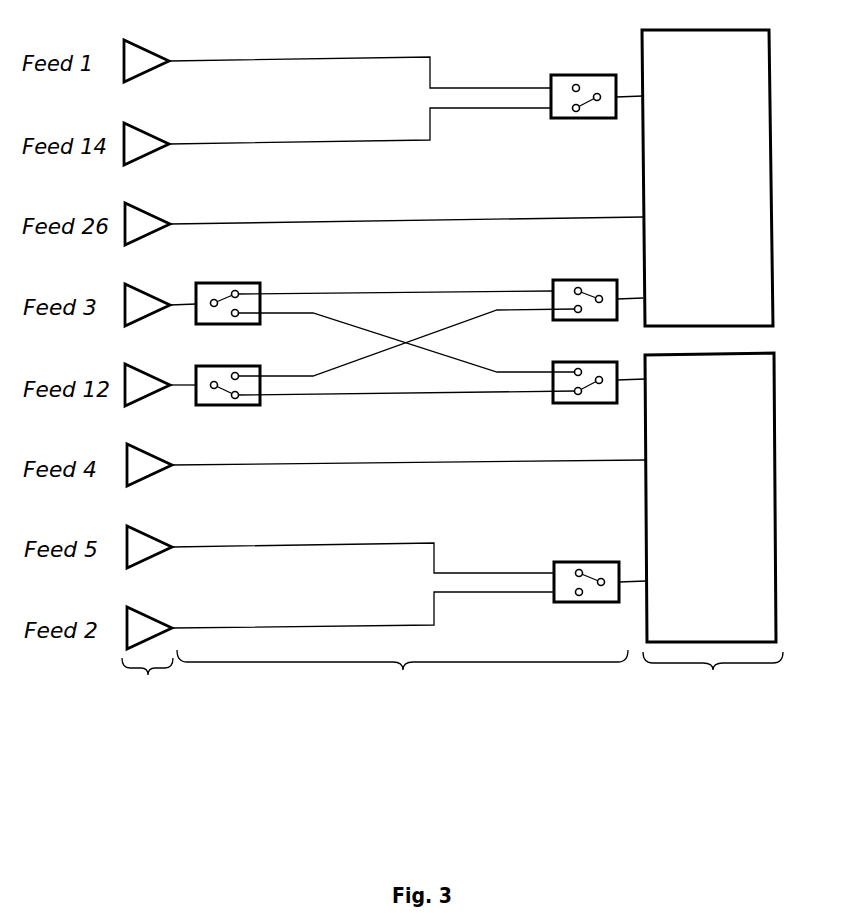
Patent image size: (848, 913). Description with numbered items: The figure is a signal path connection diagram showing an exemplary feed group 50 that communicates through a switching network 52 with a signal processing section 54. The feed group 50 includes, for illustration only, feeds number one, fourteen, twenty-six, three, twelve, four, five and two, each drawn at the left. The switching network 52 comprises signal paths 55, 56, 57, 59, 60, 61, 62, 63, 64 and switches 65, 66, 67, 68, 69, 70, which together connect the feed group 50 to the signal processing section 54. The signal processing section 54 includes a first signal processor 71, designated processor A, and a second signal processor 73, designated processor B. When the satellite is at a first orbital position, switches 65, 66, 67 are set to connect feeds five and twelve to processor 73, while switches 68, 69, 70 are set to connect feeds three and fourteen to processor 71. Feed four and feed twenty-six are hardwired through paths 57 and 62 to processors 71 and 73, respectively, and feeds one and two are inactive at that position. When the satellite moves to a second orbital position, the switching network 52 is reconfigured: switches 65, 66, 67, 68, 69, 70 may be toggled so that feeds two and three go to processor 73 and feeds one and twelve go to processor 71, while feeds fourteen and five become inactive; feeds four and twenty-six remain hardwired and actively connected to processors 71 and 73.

The feed group 50 is at (147, 376).
The switching network 52 is at (407, 360).
The signal processing section 54 is at (738, 367).
The signal path 55 is at (235, 626).
The signal path 56 is at (235, 545).
The signal path 57 is at (412, 464).
The signal path 59 is at (386, 347).
The signal path 60 is at (383, 335).
The signal path 61 is at (365, 292).
The signal path 62 is at (365, 222).
The signal path 63 is at (245, 143).
The signal path 64 is at (245, 60).
The switch 65 is at (572, 605).
The switch 66 is at (249, 405).
The switch 67 is at (558, 403).
The switch 68 is at (248, 283).
The switch 69 is at (558, 280).
The switch 70 is at (573, 118).
The first signal processor 71 is at (772, 175).
The second signal processor 73 is at (777, 468).